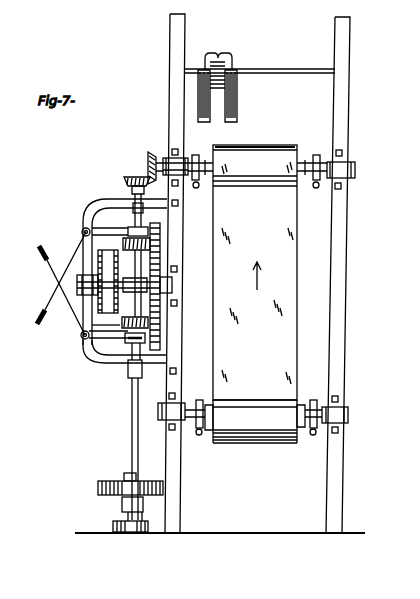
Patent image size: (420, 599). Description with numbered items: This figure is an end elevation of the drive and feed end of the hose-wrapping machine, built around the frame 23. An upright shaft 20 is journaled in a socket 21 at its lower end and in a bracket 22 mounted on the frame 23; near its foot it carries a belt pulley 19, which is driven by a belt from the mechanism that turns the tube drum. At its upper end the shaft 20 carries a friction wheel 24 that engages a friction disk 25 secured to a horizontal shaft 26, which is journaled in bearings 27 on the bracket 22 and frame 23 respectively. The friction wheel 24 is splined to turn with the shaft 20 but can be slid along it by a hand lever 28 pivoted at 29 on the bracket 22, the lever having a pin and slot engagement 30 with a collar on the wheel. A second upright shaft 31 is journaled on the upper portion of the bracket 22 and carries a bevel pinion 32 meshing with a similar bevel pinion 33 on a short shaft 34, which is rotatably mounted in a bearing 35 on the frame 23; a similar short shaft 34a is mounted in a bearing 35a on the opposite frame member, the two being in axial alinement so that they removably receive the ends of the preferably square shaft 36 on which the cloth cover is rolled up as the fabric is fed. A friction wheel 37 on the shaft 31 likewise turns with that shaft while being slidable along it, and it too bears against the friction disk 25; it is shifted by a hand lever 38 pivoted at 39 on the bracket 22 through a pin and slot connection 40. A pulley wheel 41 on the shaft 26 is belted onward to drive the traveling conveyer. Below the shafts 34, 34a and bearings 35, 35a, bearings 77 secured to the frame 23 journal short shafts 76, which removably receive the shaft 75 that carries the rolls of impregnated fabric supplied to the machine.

The pulley 19 is at (103, 493).
The shaft 20 is at (131, 443).
The socket 21 is at (130, 525).
The bracket 22 is at (100, 362).
The frame 23 is at (343, 27).
The friction wheel 24 is at (150, 323).
The friction disk 25 is at (148, 340).
The horizontal shaft 26 is at (136, 281).
The bearings 27 is at (87, 295).
The hand lever 28 is at (37, 253).
The pivot 29 is at (82, 345).
The pin and slot engagement 30 is at (142, 368).
The second upright shaft 31 is at (134, 215).
The bevel pinion 32 is at (124, 180).
The bevel pinion 33 is at (148, 163).
The short shaft 34 is at (195, 153).
The short shaft 34a is at (317, 153).
The bearing 35 is at (165, 158).
The bearing 35a is at (349, 167).
The square shaft 36 is at (217, 147).
The friction wheel 37 is at (151, 242).
The hand lever 38 is at (36, 320).
The pivot 39 is at (84, 232).
The pin and slot connection 40 is at (127, 229).
The pulley wheel 41 is at (98, 285).
The shaft 75 is at (205, 430).
The short shafts 76 is at (312, 432).
The bearings 77 is at (165, 422).